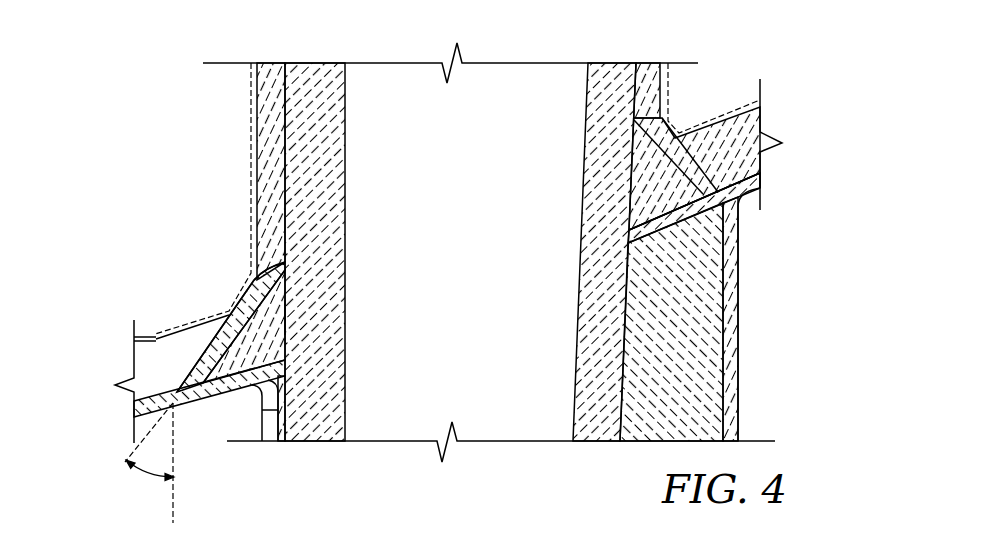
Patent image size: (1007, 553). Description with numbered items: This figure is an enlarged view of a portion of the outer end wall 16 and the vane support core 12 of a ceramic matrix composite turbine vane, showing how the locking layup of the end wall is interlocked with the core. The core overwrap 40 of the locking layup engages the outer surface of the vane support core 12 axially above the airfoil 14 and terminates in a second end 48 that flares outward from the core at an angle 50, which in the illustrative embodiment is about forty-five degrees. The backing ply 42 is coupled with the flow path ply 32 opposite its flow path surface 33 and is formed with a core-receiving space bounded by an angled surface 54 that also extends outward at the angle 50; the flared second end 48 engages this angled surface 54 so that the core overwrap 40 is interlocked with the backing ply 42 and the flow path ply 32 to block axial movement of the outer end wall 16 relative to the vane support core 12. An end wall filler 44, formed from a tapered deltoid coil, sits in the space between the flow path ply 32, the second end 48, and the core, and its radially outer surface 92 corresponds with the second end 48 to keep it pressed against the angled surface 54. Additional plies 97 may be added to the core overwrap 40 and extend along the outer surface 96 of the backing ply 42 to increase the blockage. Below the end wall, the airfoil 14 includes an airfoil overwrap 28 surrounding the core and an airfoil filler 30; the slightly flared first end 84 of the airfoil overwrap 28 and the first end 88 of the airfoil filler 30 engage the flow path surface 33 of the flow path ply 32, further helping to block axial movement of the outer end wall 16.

The vane support core 12 is at (313, 80).
The airfoil 14 is at (742, 231).
The outer end wall 16 is at (136, 329).
The airfoil overwrap 28 is at (736, 263).
The airfoil filler 30 is at (710, 332).
The flow path ply 32 is at (130, 408).
The flow path surface 33 is at (191, 408).
The core overwrap 40 is at (270, 72).
The backing ply 42 is at (145, 362).
The end wall filler 44 is at (295, 317).
The second end 48 is at (231, 312).
The angle 50 is at (150, 478).
The angled surface 54 is at (222, 345).
The first end 84 is at (762, 199).
The first end 88 is at (727, 213).
The radially outer surface 92 is at (285, 263).
The outer surface 96 is at (718, 118).
The additional plies 97 is at (248, 161).